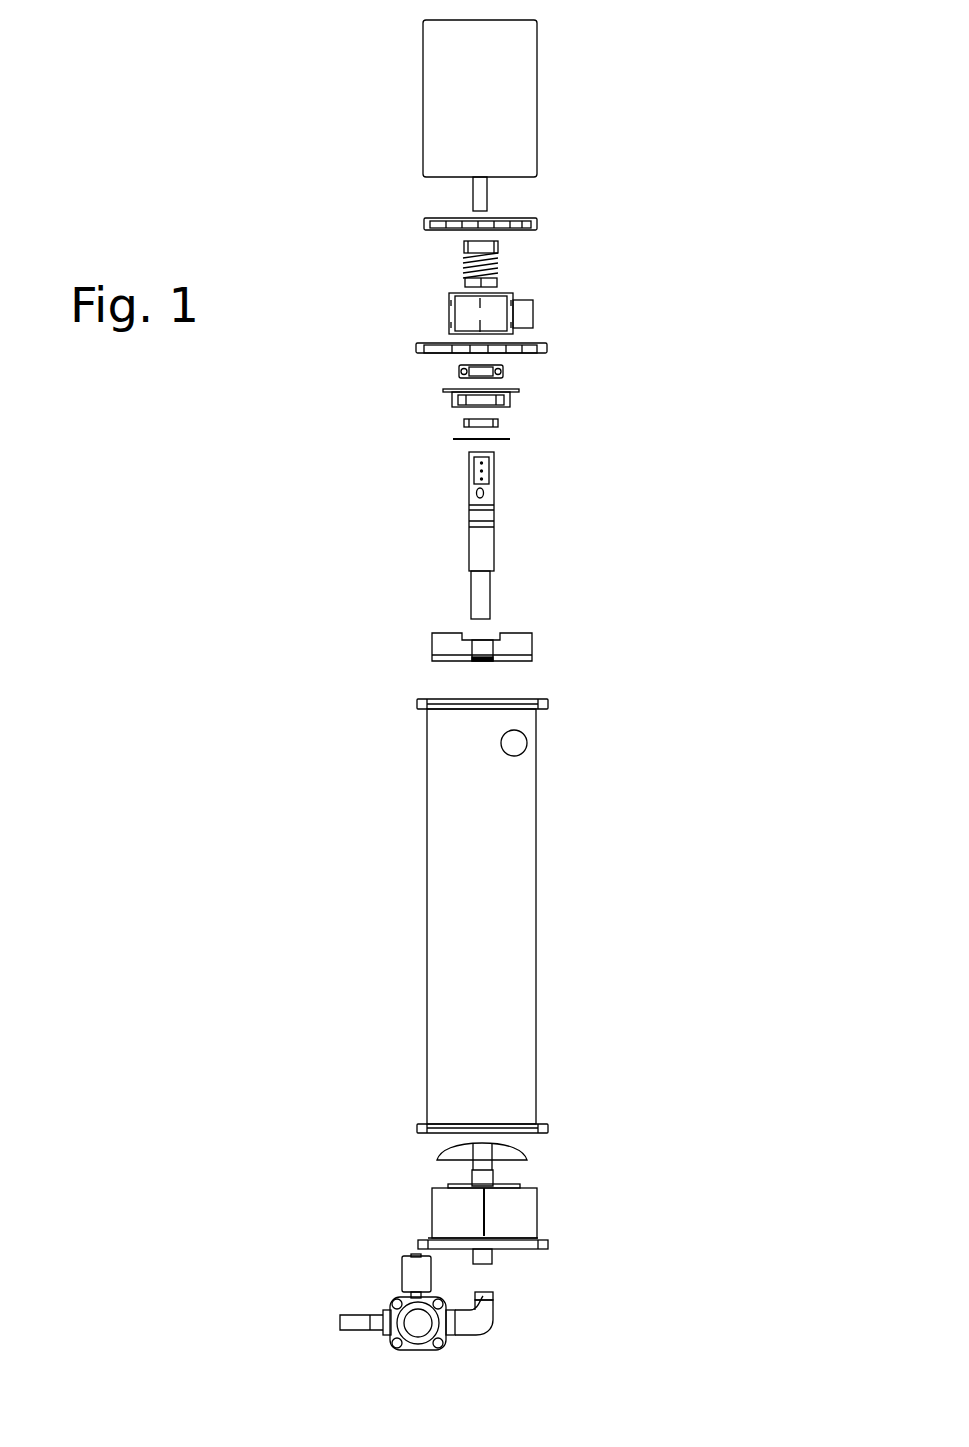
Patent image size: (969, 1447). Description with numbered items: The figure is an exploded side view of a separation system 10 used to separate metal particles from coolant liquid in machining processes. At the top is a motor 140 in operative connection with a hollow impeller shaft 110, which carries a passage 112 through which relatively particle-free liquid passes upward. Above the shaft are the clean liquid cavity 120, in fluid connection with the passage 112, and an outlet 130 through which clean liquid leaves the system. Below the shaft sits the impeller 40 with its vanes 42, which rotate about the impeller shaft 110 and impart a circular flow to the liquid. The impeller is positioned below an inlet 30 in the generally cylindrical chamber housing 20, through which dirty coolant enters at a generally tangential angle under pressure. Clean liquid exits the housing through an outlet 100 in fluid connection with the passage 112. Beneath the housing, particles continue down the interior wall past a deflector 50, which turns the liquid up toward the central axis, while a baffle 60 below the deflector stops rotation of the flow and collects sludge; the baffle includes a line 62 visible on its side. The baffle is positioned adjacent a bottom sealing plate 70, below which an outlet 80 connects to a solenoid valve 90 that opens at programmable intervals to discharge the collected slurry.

The separation system 10 is at (781, 129).
The chamber housing 20 is at (426, 912).
The inlet 30 is at (520, 758).
The impeller 40 is at (535, 654).
The vanes 42 is at (518, 638).
The deflector 50 is at (427, 1150).
The baffle 60 is at (422, 1203).
The seam line 62 is at (487, 1212).
The bottom sealing plate 70 is at (548, 1245).
The outlet 80 is at (498, 1258).
The solenoid valve 90 is at (392, 1290).
The outlet 100 is at (478, 622).
The impeller shaft 110 is at (465, 504).
The passage 112 is at (485, 588).
The clean liquid cavity 120 is at (451, 293).
The outlet 130 is at (537, 322).
The motor 140 is at (540, 114).